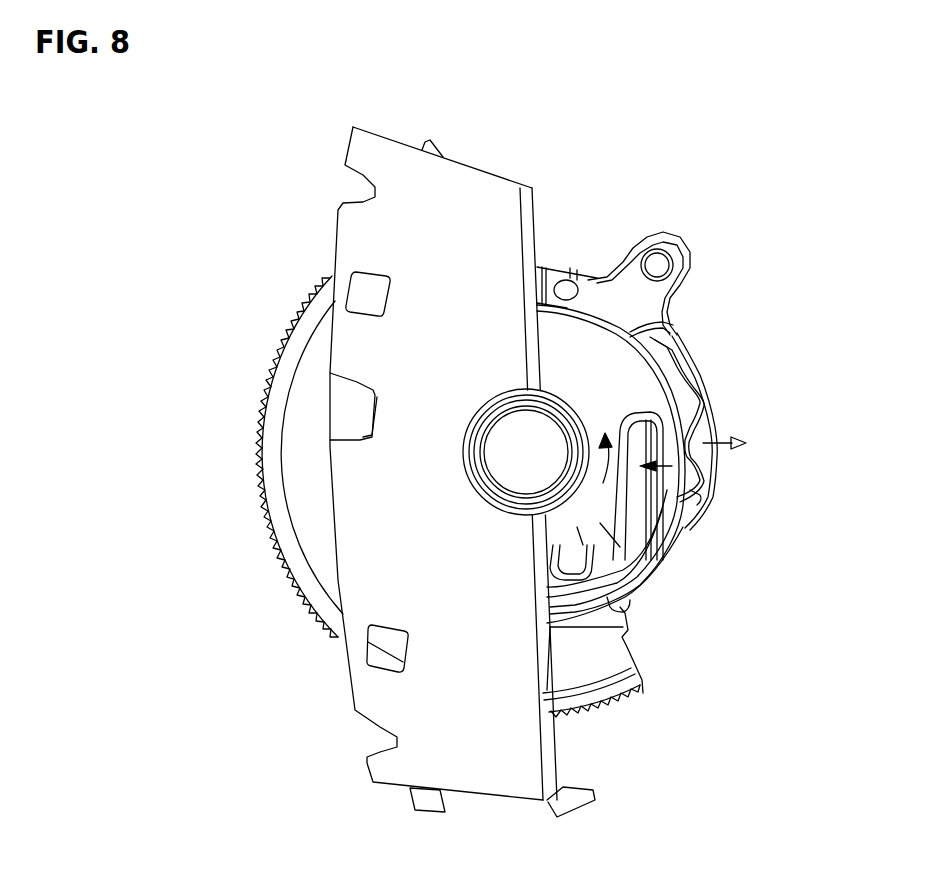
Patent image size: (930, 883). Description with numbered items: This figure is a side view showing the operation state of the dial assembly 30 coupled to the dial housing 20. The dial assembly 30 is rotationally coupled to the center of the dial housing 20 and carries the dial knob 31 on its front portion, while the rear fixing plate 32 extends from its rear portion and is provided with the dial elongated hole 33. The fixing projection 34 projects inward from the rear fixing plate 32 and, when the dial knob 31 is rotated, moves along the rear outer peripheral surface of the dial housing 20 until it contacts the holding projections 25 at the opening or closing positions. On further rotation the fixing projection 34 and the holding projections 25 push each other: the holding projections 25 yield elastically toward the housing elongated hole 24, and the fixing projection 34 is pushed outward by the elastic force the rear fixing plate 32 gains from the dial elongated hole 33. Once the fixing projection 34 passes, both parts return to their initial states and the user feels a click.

The dial housing 20 is at (372, 583).
The housing elongated hole 24 is at (573, 567).
The holding projections 25 is at (690, 492).
The dial assembly 30 is at (303, 480).
The dial knob 31 is at (270, 375).
The rear fixing plate 32 is at (638, 308).
The dial elongated hole 33 is at (683, 517).
The fixing projection 34 is at (687, 420).